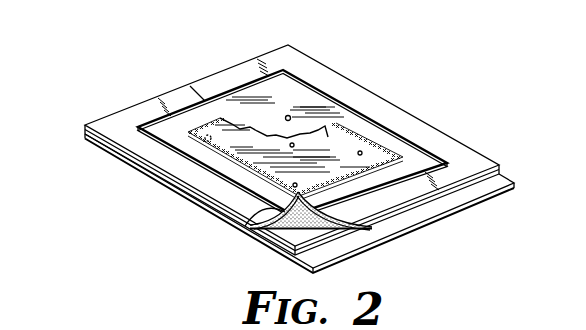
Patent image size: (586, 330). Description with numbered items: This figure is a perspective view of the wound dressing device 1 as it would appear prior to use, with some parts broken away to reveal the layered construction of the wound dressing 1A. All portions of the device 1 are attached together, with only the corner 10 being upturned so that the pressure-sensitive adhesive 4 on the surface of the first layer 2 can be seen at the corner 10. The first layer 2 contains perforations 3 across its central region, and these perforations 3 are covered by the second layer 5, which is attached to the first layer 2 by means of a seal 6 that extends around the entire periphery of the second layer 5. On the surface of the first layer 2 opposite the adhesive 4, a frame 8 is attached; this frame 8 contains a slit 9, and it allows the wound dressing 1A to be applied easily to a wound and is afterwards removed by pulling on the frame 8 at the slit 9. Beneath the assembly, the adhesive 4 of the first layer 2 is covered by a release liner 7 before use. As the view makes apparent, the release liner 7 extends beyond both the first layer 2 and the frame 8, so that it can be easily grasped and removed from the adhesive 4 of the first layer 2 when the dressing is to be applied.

The device 1 is at (460, 128).
The wound dressing 1A is at (215, 206).
The first layer 2 is at (383, 135).
The perforations 3 is at (289, 115).
The pressure-sensitive adhesive 4 is at (270, 218).
The second layer 5 is at (325, 138).
The seal 6 is at (391, 148).
The release liner 7 is at (410, 225).
The frame 8 is at (257, 58).
The slit 9 is at (193, 85).
The corner 10 is at (252, 216).